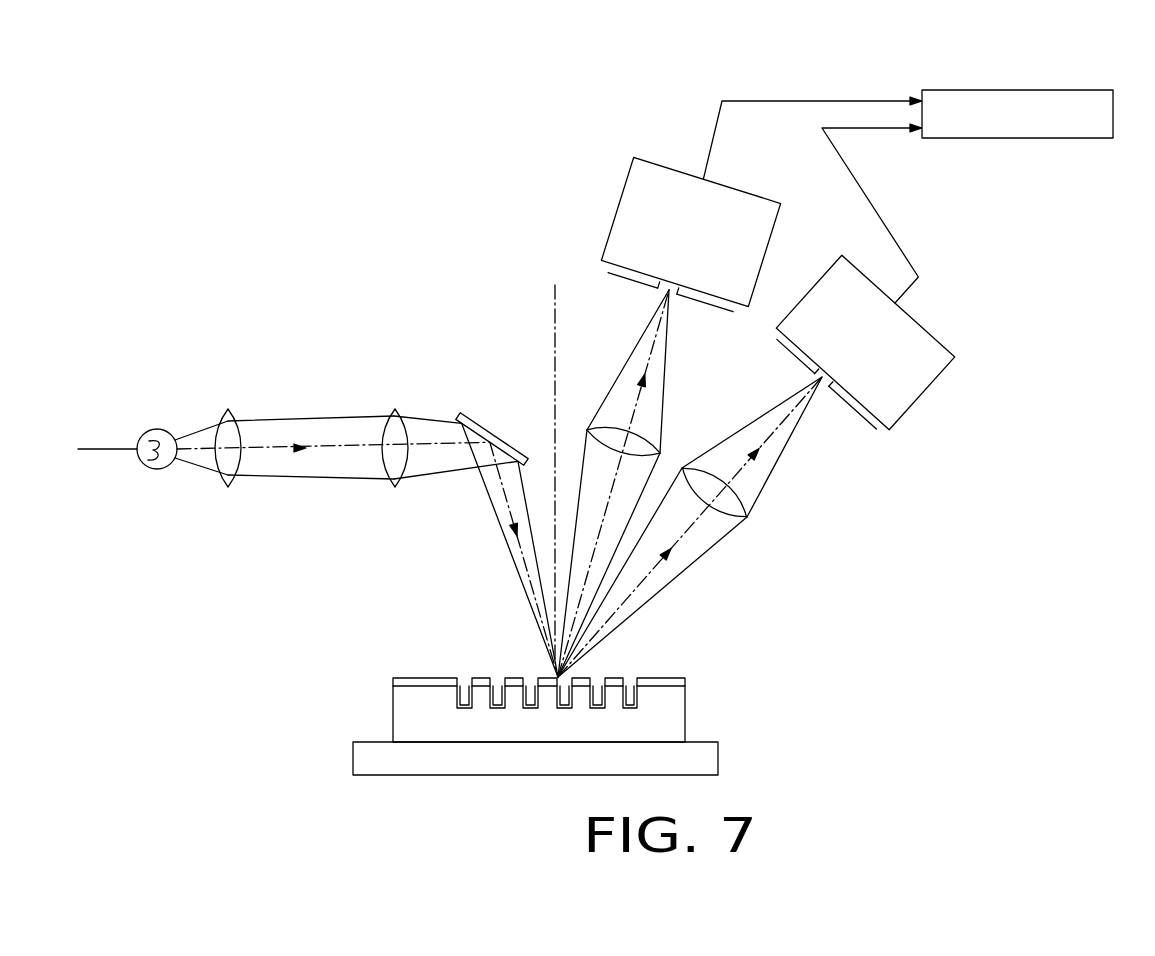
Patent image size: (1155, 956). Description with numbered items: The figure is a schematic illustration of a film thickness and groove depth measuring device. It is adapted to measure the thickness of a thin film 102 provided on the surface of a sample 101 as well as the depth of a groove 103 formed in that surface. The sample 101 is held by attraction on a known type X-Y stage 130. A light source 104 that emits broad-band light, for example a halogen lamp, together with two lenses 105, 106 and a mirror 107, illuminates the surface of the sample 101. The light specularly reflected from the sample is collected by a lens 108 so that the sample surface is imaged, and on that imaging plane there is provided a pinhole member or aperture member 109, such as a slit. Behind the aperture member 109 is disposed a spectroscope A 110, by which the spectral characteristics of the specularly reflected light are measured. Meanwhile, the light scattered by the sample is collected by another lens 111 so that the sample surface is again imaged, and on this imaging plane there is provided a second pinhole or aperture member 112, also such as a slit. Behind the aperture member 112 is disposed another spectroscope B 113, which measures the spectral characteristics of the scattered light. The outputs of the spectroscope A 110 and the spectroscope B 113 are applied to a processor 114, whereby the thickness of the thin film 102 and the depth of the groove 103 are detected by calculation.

The sample 101 is at (676, 720).
The thin film 102 is at (688, 680).
The groove 103 is at (597, 692).
The light source 104 is at (160, 430).
The lens 105 is at (230, 410).
The lens 106 is at (397, 408).
The mirror 107 is at (468, 416).
The lens 108 is at (659, 452).
The aperture member 109 is at (707, 307).
The spectroscope A 110 is at (742, 187).
The lens 111 is at (748, 516).
The aperture member 112 is at (860, 420).
The spectroscope B 113 is at (933, 338).
The processor 114 is at (1043, 90).
The X-Y stage 130 is at (358, 762).